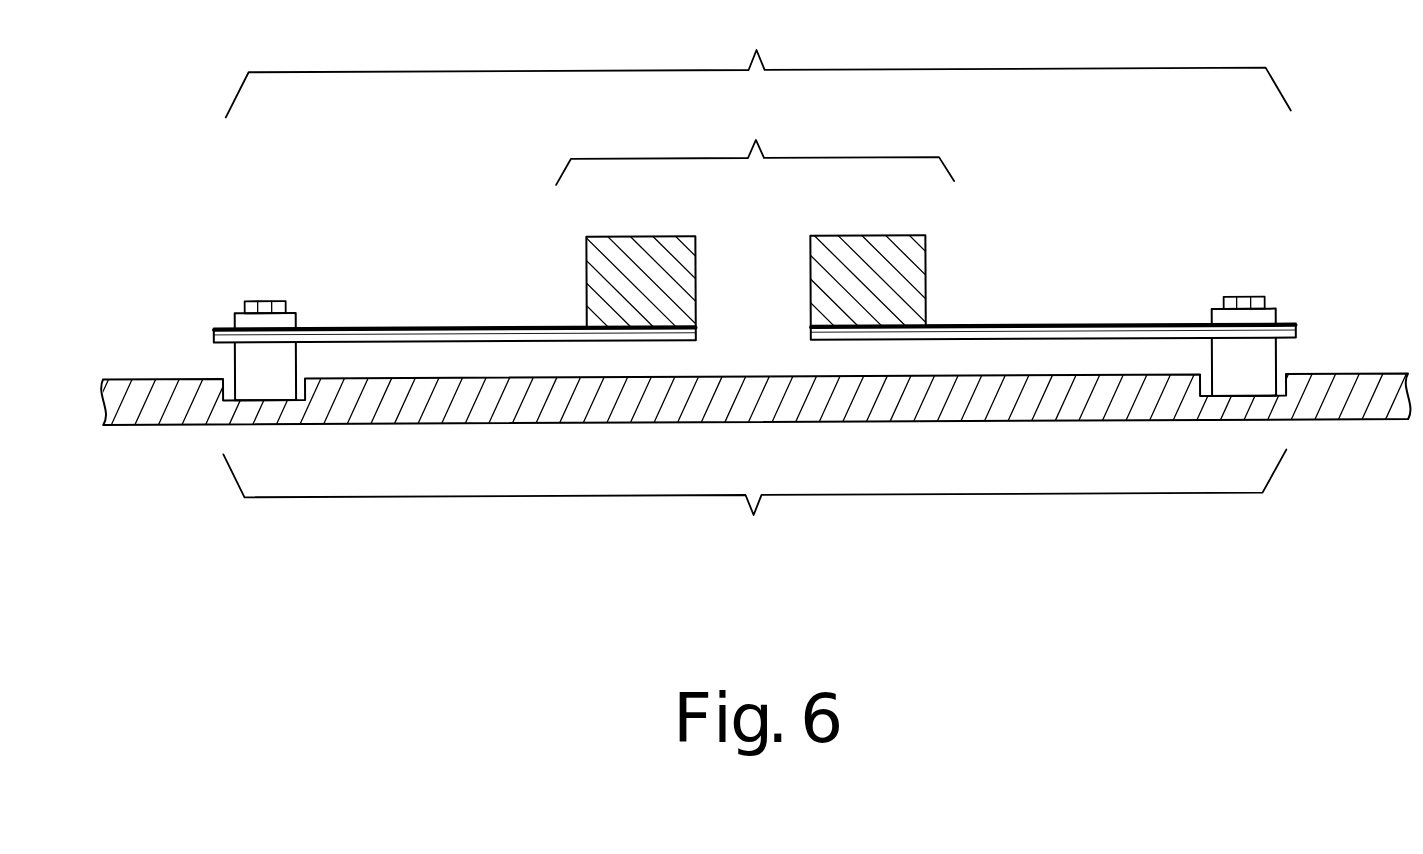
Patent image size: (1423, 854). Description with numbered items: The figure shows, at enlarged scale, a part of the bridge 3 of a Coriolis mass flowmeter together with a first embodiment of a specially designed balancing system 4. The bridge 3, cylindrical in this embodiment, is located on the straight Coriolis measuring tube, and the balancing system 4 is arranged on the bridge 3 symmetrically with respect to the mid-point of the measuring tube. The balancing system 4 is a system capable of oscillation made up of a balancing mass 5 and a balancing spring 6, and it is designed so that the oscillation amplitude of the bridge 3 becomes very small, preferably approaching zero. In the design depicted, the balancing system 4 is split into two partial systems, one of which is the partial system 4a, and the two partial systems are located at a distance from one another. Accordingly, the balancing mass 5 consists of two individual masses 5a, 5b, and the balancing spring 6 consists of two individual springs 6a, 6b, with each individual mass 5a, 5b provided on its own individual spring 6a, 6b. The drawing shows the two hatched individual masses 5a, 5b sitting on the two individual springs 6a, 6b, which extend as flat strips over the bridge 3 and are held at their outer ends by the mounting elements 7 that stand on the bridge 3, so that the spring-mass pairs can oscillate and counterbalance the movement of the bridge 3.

The bridge 3 is at (1336, 388).
The balancing system 4 is at (757, 61).
The partial system 4a is at (1000, 151).
The balancing mass 5 is at (755, 139).
The individual mass 5a is at (603, 255).
The individual mass 5b is at (898, 257).
The balancing spring 6 is at (755, 509).
The individual spring 6a is at (404, 326).
The individual spring 6b is at (1085, 325).
The standoff with fastener 7 is at (257, 362).